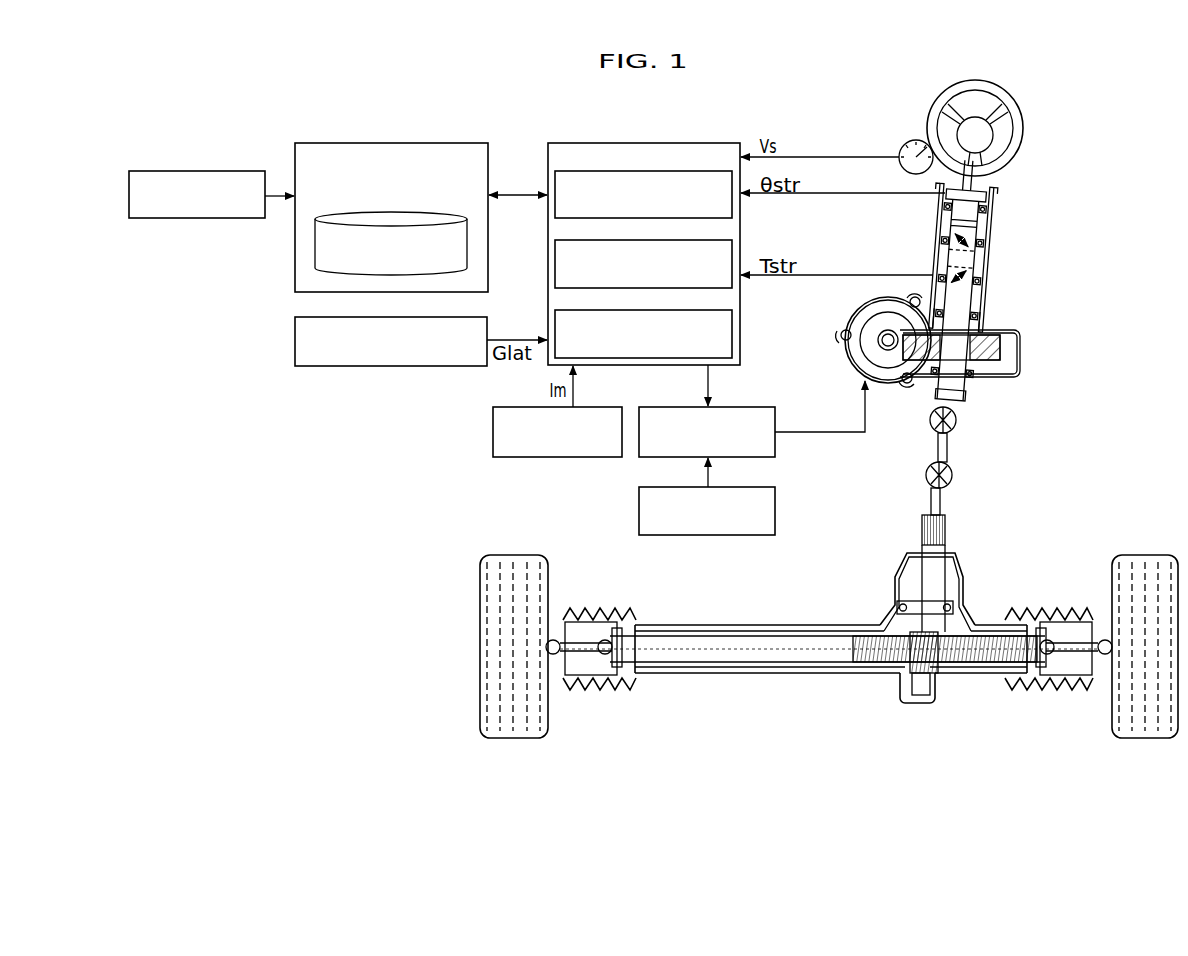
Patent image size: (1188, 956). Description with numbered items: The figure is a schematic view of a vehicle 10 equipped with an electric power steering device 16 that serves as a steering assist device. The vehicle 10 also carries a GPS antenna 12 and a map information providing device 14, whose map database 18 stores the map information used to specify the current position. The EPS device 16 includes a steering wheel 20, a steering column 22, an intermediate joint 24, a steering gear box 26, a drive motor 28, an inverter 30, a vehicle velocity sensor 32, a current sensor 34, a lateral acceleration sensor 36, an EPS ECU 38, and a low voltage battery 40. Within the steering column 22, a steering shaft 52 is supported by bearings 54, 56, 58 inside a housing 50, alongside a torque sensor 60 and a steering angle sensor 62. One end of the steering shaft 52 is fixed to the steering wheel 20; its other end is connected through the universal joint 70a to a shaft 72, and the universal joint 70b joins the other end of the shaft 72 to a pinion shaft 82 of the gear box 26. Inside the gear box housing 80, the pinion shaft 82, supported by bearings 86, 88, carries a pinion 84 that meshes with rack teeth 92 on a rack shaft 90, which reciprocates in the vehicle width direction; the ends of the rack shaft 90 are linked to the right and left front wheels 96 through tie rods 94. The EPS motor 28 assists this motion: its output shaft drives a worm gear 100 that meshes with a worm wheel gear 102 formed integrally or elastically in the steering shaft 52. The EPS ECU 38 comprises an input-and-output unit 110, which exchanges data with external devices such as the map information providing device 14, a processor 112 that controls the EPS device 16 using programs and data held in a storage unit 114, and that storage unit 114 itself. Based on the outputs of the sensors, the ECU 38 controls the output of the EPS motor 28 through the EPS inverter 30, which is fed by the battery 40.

The vehicle 10 is at (1065, 151).
The global positioning system (GPS) antenna 12 is at (233, 171).
The map information providing device 14 is at (327, 143).
The electric power steering device 16 is at (1078, 178).
The map database 18 is at (318, 242).
The steering wheel 20 is at (937, 103).
The steering column 22 is at (996, 220).
The intermediate joint 24 is at (1005, 461).
The steering gear box 26 is at (830, 642).
The drive motor 28 is at (864, 346).
The inverter 30 is at (760, 413).
The vehicle velocity sensor 32 is at (905, 140).
The current sensor 34 is at (605, 413).
The lateral acceleration sensor 36 is at (300, 330).
The EPS electronic control unit 38 is at (562, 148).
The low voltage battery 40 is at (778, 495).
The housing 50 is at (1014, 377).
The steering shaft 52 is at (985, 293).
The bearing 54 is at (943, 203).
The bearing 56 is at (985, 315).
The bearing 58 is at (980, 382).
The torque sensor 60 is at (988, 282).
The steering angle sensor 62 is at (990, 194).
The universal joint 70a is at (950, 423).
The universal joint 70b is at (953, 473).
The shaft 72 is at (948, 448).
The housing 80 is at (793, 675).
The pinion shaft 82 is at (947, 542).
The pinion 84 is at (922, 703).
The bearing 86 is at (897, 608).
The bearing 88 is at (908, 687).
The rack shaft 90 is at (753, 658).
The rack teeth 92 is at (965, 658).
The tie rods 94 is at (593, 654).
The front wheels 96 is at (490, 580).
The worm gear 100 is at (877, 340).
The worm wheel gear 102 is at (1020, 352).
The input-and-output unit 110 is at (558, 182).
The processor 112 is at (558, 252).
The storage unit 114 is at (558, 320).